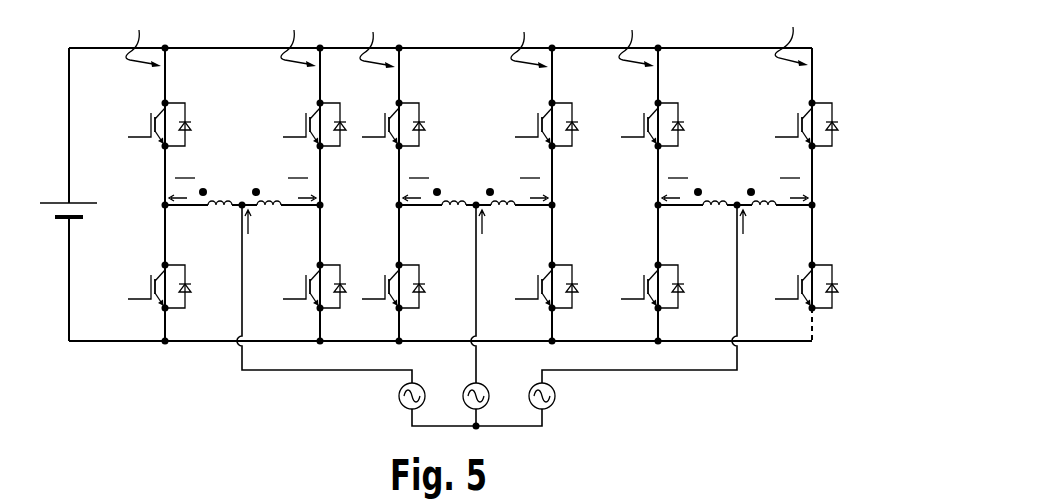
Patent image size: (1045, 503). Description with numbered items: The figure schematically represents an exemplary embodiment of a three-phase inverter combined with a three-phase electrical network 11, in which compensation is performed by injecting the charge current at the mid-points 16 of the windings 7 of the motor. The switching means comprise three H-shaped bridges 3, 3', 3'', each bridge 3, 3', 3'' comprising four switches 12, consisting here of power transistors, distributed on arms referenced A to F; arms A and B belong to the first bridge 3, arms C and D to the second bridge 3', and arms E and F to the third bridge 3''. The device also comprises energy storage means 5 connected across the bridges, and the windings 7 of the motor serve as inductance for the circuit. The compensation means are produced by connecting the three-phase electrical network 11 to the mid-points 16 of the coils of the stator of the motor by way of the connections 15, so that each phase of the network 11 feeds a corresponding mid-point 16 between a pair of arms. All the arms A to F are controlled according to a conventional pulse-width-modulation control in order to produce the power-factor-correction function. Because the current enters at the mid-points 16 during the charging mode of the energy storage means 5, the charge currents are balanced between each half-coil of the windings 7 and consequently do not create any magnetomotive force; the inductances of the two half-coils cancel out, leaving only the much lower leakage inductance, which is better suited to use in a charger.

The H-shaped bridge 3 is at (223, 170).
The H-shaped bridge 3' is at (456, 173).
The H-shaped bridge 3'' is at (715, 171).
The energy storage means 5 is at (56, 203).
The windings 7 is at (219, 198).
The three-phase electrical network 11 is at (400, 403).
The switch 12 is at (178, 103).
The output line 15 is at (242, 363).
The mid-point 16 is at (242, 208).